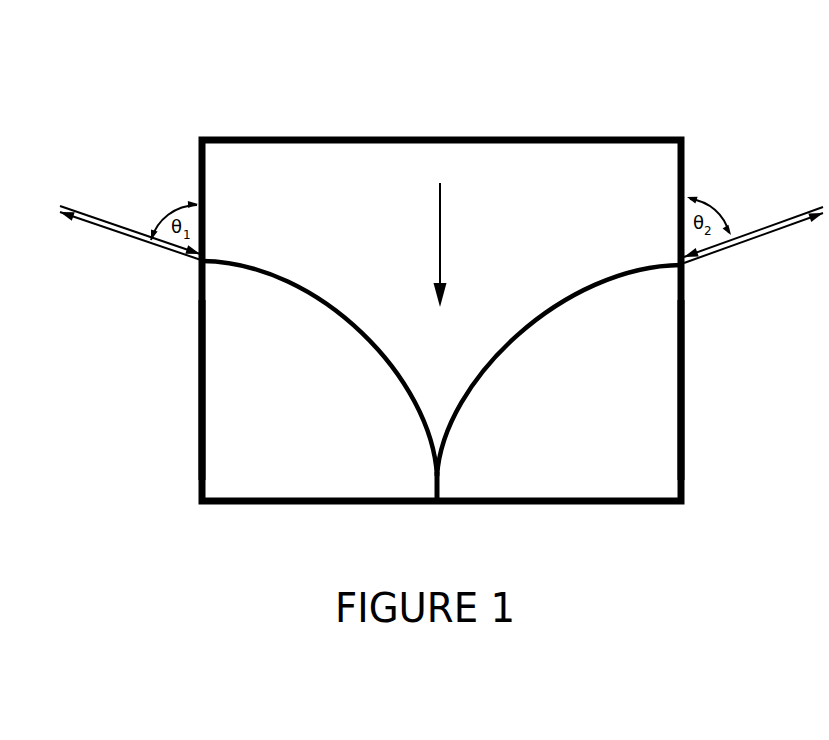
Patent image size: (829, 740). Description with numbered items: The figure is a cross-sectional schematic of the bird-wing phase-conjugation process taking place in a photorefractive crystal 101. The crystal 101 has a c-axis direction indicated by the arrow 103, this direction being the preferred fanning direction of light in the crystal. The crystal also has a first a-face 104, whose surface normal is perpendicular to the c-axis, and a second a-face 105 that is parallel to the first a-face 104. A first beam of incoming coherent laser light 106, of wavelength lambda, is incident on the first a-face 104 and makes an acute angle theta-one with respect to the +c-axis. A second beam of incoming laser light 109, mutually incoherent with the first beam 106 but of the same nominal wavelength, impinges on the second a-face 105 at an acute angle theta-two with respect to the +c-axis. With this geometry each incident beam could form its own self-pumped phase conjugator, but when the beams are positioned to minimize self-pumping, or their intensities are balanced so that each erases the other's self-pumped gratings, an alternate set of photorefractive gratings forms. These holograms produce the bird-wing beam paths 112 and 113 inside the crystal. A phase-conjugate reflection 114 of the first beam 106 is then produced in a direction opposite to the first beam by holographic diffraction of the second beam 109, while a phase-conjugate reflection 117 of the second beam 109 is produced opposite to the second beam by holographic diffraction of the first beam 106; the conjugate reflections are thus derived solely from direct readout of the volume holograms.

The photorefractive crystal 101 is at (568, 136).
The arrow indicating c-axis direction 103 is at (440, 222).
The first a-face 104 is at (199, 390).
The second a-face 105 is at (684, 387).
The first beam of incoming coherent laser light 106 is at (78, 210).
The second beam of incoming laser light 109 is at (765, 228).
The bird-wing beam path 112 is at (417, 410).
The bird-wing beam path 113 is at (468, 390).
The phase-conjugate reflection of the first beam 114 is at (112, 231).
The phase-conjugate reflection of the second beam 117 is at (753, 245).